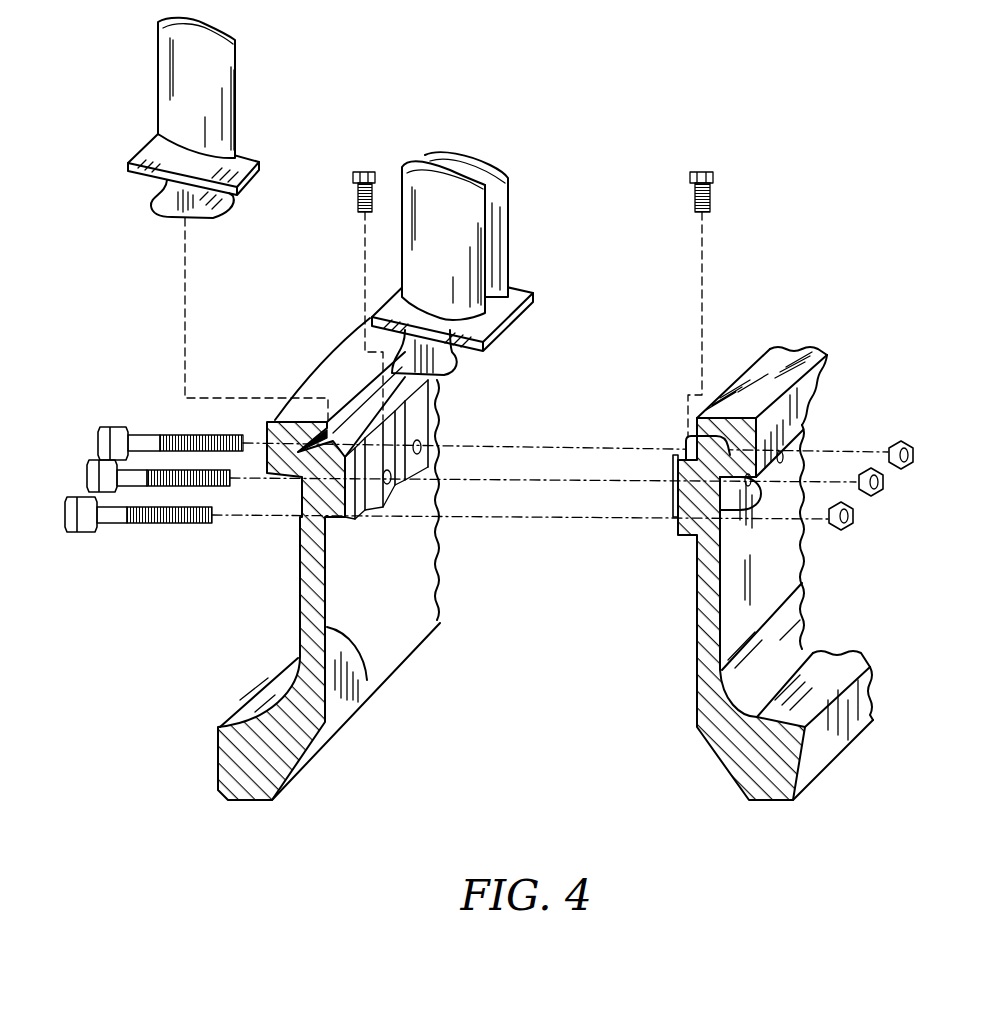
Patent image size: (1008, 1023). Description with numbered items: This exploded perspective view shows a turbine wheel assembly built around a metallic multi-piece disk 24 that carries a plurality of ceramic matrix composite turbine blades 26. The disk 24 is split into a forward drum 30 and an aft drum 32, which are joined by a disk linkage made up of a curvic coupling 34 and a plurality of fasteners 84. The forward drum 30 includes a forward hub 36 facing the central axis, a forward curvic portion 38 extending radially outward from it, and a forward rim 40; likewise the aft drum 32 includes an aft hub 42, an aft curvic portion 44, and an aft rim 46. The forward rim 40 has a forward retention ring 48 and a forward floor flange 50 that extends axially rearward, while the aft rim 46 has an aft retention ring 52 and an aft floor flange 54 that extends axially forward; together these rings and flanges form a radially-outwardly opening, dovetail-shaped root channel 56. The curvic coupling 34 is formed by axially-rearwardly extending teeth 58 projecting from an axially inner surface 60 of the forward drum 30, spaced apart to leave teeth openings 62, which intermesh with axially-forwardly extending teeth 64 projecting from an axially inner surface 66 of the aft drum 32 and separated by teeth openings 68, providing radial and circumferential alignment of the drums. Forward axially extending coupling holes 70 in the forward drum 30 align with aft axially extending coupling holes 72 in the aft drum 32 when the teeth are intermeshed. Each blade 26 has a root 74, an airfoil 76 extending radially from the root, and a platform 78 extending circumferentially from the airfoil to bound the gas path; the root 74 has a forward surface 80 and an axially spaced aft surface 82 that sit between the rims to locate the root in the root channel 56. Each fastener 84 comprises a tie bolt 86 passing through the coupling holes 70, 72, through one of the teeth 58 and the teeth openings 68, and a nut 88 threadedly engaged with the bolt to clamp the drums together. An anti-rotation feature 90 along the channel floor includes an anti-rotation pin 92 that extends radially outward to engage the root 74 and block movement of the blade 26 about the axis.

The multi-piece disk 24 is at (208, 795).
The turbine blade 26 is at (199, 109).
The forward drum 30 is at (333, 574).
The aft drum 32 is at (764, 456).
The curvic coupling 34 is at (617, 492).
The forward hub 36 is at (218, 740).
The forward curvic portion 38 is at (298, 567).
The forward rim 40 is at (240, 427).
The aft hub 42 is at (807, 757).
The aft curvic portion 44 is at (822, 548).
The aft rim 46 is at (800, 406).
The forward retention ring 48 is at (298, 422).
The forward floor flange 50 is at (310, 490).
The aft retention ring 52 is at (758, 437).
The aft floor flange 54 is at (745, 490).
The root channel 56 is at (298, 453).
The axially-rearwardly extending teeth 58 is at (415, 472).
The axially inner surface 60 is at (357, 688).
The teeth openings 62 is at (300, 453).
The axially-forwardly extending teeth 64 is at (676, 512).
The axially inner surface 66 is at (697, 675).
The teeth openings 68 is at (676, 458).
The forward axially extending coupling holes 70 is at (360, 465).
The aft axially extending coupling holes 72 is at (723, 520).
The root 74 is at (157, 208).
The airfoil 76 is at (157, 92).
The platform 78 is at (253, 156).
The forward surface 80 is at (150, 195).
The aft surface 82 is at (225, 210).
The fasteners 84 is at (124, 406).
The tie bolt 86 is at (78, 497).
The nut 88 is at (853, 506).
The anti-rotation feature 90 is at (677, 429).
The anti-rotation pin 92 is at (703, 170).